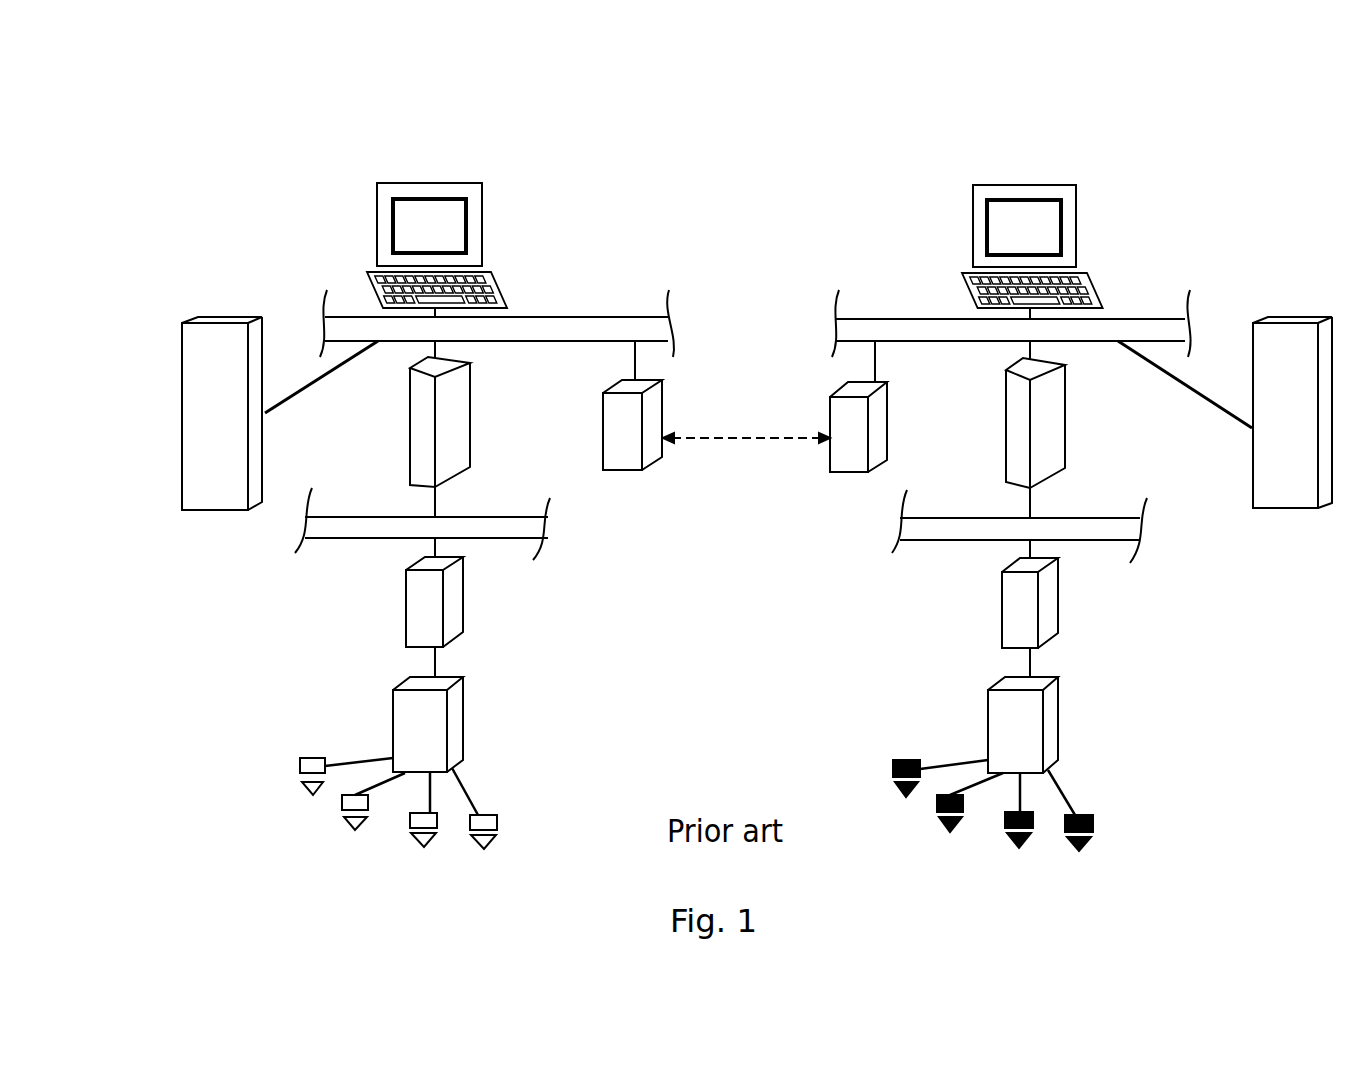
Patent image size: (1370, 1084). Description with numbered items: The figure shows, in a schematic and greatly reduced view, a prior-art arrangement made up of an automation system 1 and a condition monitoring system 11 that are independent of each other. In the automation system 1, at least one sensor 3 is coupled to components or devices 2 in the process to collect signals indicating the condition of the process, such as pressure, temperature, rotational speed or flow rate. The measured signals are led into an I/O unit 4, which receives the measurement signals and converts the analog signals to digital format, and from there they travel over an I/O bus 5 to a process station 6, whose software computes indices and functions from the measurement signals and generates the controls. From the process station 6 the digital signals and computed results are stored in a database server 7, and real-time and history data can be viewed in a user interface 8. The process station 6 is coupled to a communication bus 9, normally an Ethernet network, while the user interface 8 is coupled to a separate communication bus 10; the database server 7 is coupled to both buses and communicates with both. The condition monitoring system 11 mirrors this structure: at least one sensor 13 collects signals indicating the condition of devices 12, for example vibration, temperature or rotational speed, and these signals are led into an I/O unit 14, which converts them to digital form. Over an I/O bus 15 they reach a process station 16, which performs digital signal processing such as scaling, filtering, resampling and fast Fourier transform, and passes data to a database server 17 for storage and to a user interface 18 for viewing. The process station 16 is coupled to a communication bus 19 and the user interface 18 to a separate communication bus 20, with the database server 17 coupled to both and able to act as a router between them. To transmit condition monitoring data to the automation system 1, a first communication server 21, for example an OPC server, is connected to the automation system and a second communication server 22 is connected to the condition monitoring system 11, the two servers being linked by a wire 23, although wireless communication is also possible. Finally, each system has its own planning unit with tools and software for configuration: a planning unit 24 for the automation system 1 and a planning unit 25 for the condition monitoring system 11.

The automation system 1 is at (1052, 155).
The devices 2 is at (1090, 848).
The sensor 3 is at (1093, 817).
The I/O unit 4 is at (1058, 718).
The I/O bus 5 is at (1032, 658).
The process station 6 is at (1055, 617).
The database server 7 is at (1060, 435).
The user interface 8 is at (1078, 212).
The communication bus 9 is at (1082, 515).
The communication bus 10 is at (883, 318).
The condition monitoring system 11 is at (437, 155).
The devices 12 is at (493, 842).
The sensor 13 is at (497, 817).
The I/O unit 14 is at (458, 722).
The I/O bus 15 is at (437, 655).
The process station 16 is at (462, 603).
The database server 17 is at (473, 415).
The user interface 18 is at (485, 216).
The communication bus 19 is at (482, 513).
The communication bus 20 is at (535, 317).
The first communication server 21 is at (858, 472).
The second communication server 22 is at (617, 470).
The wire 23 is at (688, 437).
The planning unit 24 is at (1283, 508).
The planning unit 25 is at (200, 510).